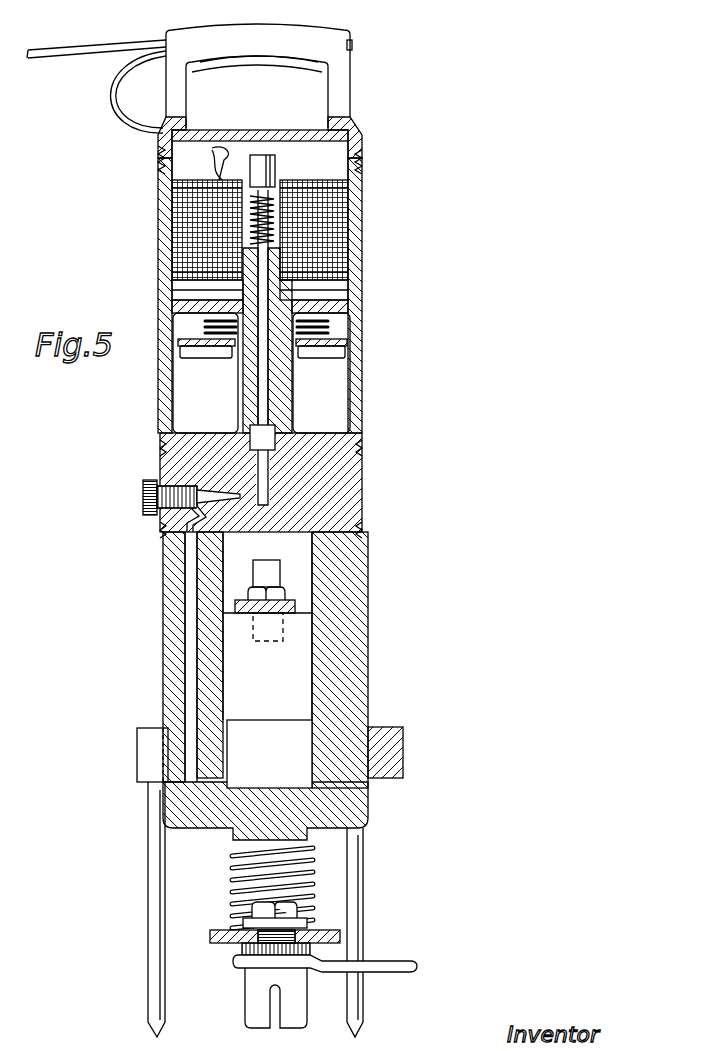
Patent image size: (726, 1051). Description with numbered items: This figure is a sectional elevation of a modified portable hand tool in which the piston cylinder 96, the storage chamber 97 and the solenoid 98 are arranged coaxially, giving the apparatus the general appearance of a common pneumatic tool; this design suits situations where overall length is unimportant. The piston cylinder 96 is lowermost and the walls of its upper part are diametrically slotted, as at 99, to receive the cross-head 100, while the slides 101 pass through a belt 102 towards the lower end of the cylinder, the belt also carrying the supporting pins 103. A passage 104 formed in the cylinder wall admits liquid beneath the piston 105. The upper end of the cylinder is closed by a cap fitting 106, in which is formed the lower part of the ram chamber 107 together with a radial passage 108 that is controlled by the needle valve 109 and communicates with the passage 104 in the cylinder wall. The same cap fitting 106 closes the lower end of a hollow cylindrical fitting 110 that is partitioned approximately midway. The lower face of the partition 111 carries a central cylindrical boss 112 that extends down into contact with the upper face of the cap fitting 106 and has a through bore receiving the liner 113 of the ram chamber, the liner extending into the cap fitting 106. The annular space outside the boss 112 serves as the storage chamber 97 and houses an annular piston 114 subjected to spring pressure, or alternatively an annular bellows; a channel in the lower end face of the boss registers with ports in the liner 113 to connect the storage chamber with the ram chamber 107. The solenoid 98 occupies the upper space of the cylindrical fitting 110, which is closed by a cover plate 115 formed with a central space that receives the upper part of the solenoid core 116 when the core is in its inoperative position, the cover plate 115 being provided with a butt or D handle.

The cover plate 115 is at (307, 128).
The solenoid core 116 is at (273, 167).
The solenoid 98 is at (347, 208).
The hollow cylindrical fitting 110 is at (158, 249).
The partition 111 is at (320, 297).
The liner 113 is at (340, 367).
The annular piston 114 is at (178, 355).
The central cylindrical boss 112 is at (240, 406).
The storage chamber 97 is at (334, 397).
The ram chamber 107 is at (263, 461).
The needle valve 109 is at (143, 494).
The cap fitting 106 is at (357, 488).
The radial passage 108 is at (233, 515).
The diametrical slot 99 is at (270, 572).
The cross-head 100 is at (297, 607).
The passage 104 is at (190, 620).
The piston 105 is at (235, 668).
The piston cylinder 96 is at (363, 669).
The belt 102 is at (393, 737).
The slides 101 is at (277, 853).
The supporting pins 103 is at (147, 877).